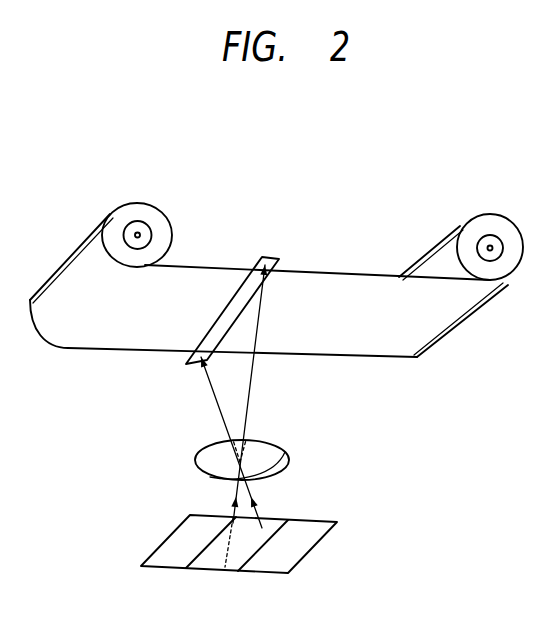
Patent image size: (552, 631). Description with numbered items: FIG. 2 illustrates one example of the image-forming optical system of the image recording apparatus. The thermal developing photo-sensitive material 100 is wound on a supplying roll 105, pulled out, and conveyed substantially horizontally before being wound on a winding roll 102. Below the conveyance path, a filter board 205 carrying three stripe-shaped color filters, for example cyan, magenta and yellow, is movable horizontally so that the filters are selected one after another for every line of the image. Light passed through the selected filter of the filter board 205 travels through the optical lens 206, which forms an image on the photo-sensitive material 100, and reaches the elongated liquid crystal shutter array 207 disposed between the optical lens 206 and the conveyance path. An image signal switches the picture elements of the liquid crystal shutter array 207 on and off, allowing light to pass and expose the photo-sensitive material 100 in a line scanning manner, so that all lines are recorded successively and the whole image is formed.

The photo-sensitive material 100 is at (352, 276).
The winding roll 102 is at (490, 237).
The supplying roll 105 is at (137, 228).
The filter board 205 is at (313, 557).
The optical lens 206 is at (289, 457).
The liquid crystal shutter array 207 is at (231, 297).